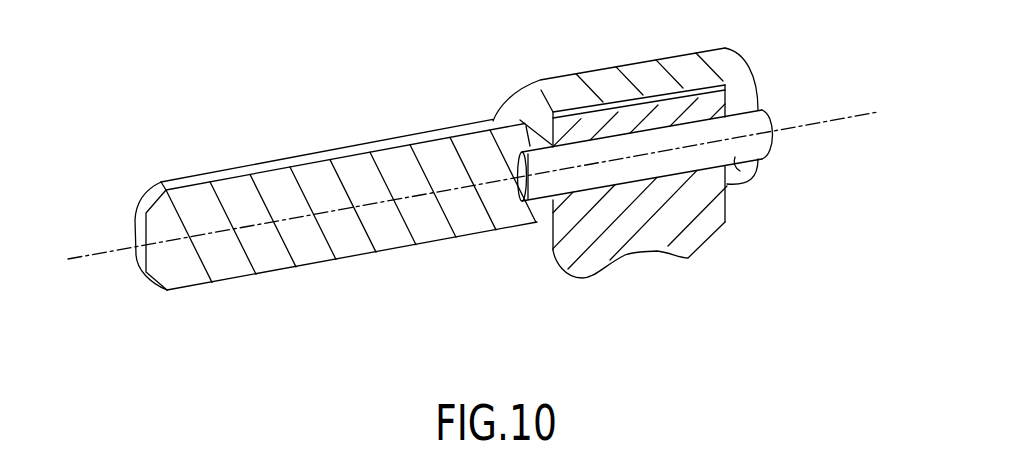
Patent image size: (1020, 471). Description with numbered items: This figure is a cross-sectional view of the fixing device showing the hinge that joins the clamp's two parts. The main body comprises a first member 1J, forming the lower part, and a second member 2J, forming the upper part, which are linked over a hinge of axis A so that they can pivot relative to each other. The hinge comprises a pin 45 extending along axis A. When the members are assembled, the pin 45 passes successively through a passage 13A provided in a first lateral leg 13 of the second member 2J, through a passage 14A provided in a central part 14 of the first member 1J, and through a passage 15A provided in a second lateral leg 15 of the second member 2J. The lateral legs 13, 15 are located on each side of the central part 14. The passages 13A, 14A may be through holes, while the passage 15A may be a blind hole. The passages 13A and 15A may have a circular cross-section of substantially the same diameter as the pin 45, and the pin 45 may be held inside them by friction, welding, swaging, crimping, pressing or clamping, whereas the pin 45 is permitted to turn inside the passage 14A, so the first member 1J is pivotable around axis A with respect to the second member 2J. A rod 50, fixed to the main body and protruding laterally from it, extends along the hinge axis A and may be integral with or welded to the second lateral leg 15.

The hinge axis A is at (73, 258).
The rod 50 is at (320, 151).
The second lateral leg 15 is at (538, 222).
The passage 15A is at (520, 120).
The second member 2J is at (637, 73).
The first lateral leg 13 is at (746, 73).
The passage 13A is at (760, 96).
The pin 45 is at (735, 157).
The central part 14 is at (588, 235).
The passage 14A is at (680, 178).
The first member 1J is at (645, 222).